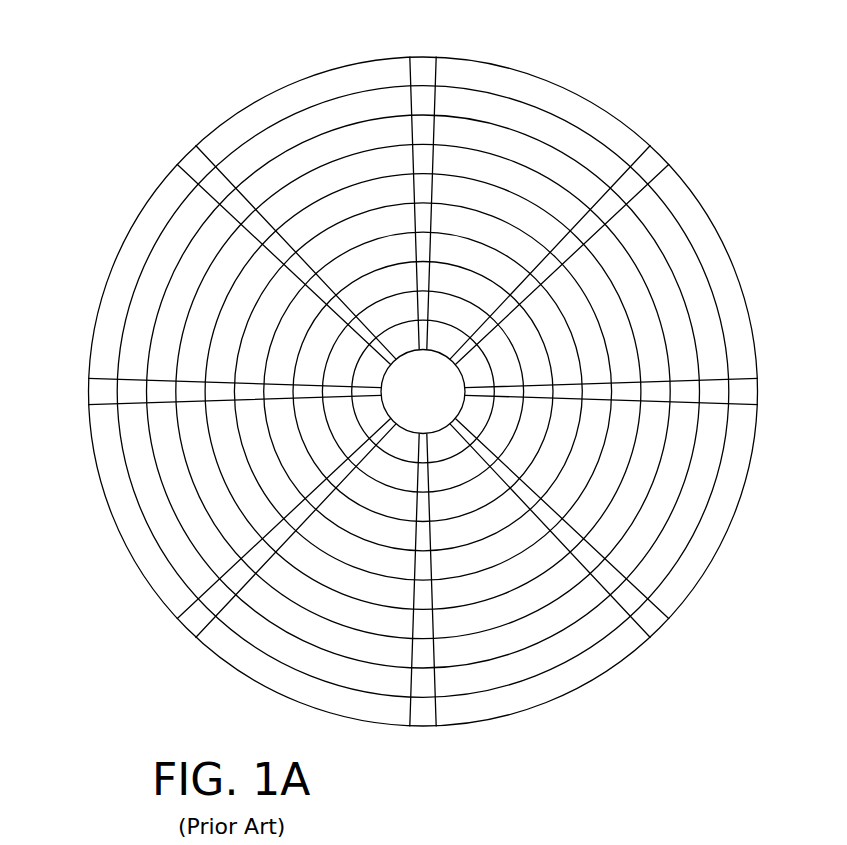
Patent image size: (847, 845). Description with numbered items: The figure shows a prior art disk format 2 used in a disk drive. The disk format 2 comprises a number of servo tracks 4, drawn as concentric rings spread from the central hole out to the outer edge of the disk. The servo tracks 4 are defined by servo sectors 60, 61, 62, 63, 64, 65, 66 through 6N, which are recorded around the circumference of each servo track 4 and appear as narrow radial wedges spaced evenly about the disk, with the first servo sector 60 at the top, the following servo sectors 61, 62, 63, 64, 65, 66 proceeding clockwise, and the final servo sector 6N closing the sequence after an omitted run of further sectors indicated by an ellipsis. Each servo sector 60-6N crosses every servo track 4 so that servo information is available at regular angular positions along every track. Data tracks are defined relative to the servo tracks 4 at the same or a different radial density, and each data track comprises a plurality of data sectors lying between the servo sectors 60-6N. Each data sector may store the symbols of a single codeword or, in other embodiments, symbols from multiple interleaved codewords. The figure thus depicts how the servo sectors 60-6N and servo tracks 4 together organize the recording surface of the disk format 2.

The disk format 2 is at (178, 62).
The servo tracks 4 is at (537, 125).
The servo sector 60 is at (428, 68).
The servo sector 61 is at (651, 163).
The servo sector 62 is at (762, 393).
The servo sector 63 is at (651, 625).
The servo sector 64 is at (424, 727).
The servo sector 65 is at (192, 624).
The servo sector 66 is at (95, 392).
The servo sector 6N is at (194, 162).